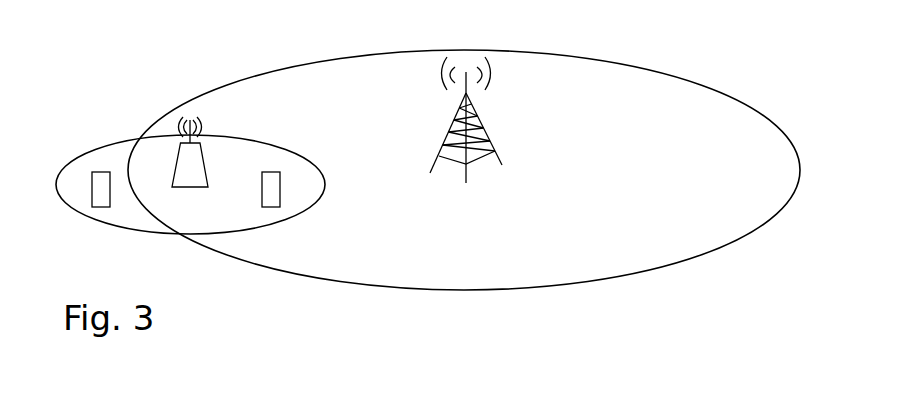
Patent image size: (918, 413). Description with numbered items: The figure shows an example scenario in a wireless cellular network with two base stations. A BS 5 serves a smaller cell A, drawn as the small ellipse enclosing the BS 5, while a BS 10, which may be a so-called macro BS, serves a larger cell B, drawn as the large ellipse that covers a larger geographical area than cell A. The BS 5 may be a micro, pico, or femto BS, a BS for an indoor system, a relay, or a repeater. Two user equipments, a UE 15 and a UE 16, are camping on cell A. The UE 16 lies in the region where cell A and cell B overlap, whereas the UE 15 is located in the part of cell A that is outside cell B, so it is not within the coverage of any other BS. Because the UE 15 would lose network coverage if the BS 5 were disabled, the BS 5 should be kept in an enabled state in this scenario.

The BS 5 is at (200, 143).
The BS 10 is at (487, 133).
The UE 15 is at (110, 198).
The UE 16 is at (280, 198).
The cell A is at (273, 143).
The cell B is at (530, 50).